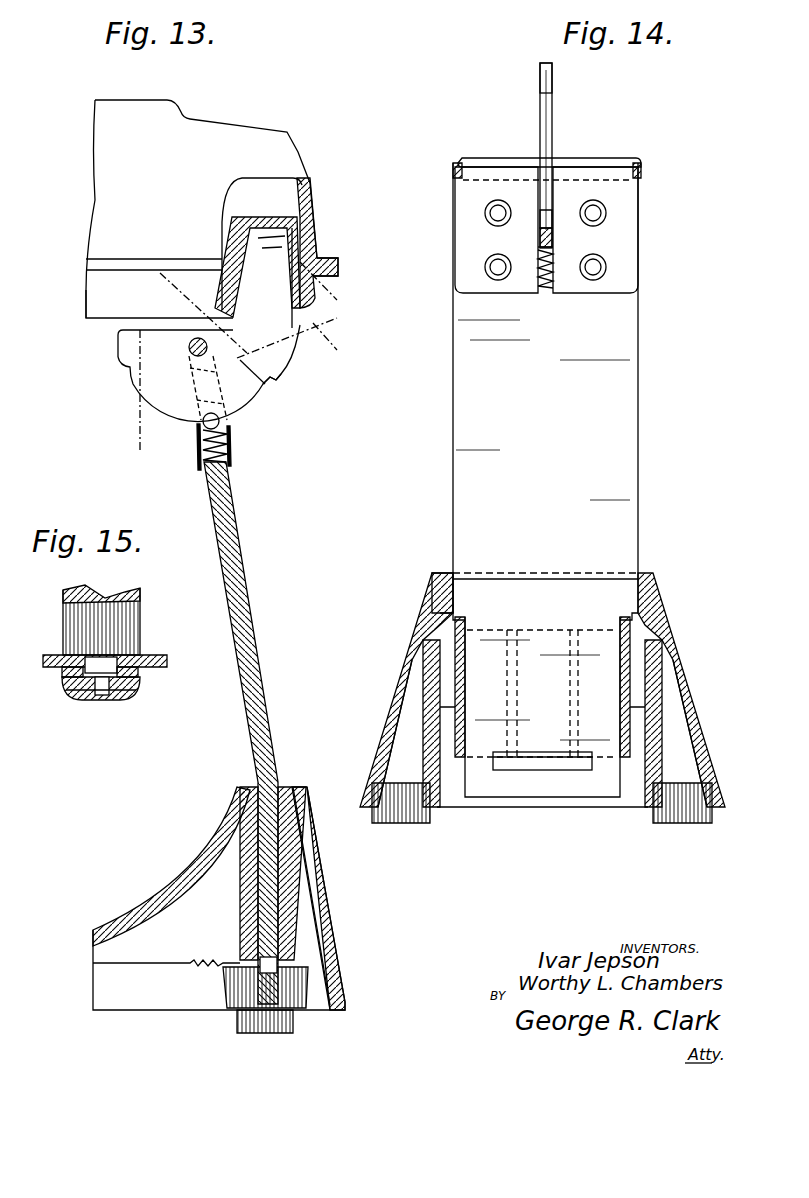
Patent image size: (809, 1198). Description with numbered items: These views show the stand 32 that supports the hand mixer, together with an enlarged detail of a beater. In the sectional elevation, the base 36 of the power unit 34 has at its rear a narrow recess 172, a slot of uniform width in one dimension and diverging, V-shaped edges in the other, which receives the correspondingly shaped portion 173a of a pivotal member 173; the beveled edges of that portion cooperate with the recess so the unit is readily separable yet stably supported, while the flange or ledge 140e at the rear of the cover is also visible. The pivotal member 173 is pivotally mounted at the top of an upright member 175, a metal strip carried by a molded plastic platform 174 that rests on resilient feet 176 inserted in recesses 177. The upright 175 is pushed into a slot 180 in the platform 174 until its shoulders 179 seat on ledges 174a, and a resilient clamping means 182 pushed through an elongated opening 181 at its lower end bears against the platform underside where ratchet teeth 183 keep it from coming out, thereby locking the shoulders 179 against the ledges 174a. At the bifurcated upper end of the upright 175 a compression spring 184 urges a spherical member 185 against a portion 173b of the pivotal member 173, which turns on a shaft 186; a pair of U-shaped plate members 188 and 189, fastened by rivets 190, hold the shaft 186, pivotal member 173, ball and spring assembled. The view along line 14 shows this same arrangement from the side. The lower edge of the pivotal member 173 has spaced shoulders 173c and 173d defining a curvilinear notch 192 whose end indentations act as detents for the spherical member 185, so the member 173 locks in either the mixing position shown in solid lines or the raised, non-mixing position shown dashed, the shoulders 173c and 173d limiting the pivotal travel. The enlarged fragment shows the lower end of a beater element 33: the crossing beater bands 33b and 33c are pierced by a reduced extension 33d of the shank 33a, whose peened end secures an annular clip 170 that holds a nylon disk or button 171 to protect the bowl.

In FIG. 13, the section line 14 is at (290, 100).
In FIG. 13, the stand 32 is at (270, 640).
In FIG. 14, the stand 32 is at (650, 494).
In FIG. 15, the beater element 33 is at (60, 599).
In FIG. 15, the shank 33a is at (133, 609).
In FIG. 15, the beater band 33b is at (58, 655).
In FIG. 15, the beater band 33c is at (64, 675).
In FIG. 15, the extension of reduced cross section 33d is at (101, 664).
In FIG. 13, the power unit 34 is at (184, 116).
In FIG. 13, the base 36 is at (100, 300).
In FIG. 13, the flange or ledge 140e is at (338, 262).
In FIG. 15, the annular clip 170 is at (136, 680).
In FIG. 15, the nylon disk or button 171 is at (97, 699).
In FIG. 13, the recess 172 is at (263, 228).
In FIG. 13, the pivotal member 173 is at (304, 326).
In FIG. 14, the pivotal member 173 is at (549, 138).
In FIG. 13, the shaped portion 173a is at (268, 241).
In FIG. 14, the shaped portion 173a is at (540, 82).
In FIG. 13, the portion of pivotal support 173b is at (178, 377).
In FIG. 13, the shoulder 173c is at (200, 432).
In FIG. 13, the shoulder 173d is at (292, 380).
In FIG. 14, the shoulder 173d is at (551, 216).
In FIG. 13, the platform 174 is at (326, 867).
In FIG. 14, the platform 174 is at (674, 649).
In FIG. 14, the ledges 174a is at (465, 625).
In FIG. 13, the upright member 175 is at (237, 560).
In FIG. 14, the upright member 175 is at (639, 356).
In FIG. 13, the feet 176 is at (240, 1022).
In FIG. 14, the feet 176 is at (424, 815).
In FIG. 14, the recesses 177 is at (412, 757).
In FIG. 13, the shoulders 179 is at (249, 790).
In FIG. 14, the shoulders 179 is at (440, 617).
In FIG. 13, the slot 180 is at (279, 786).
In FIG. 14, the slot 180 is at (456, 600).
In FIG. 13, the elongated opening 181 is at (276, 966).
In FIG. 14, the elongated opening 181 is at (534, 753).
In FIG. 13, the resilient clamping means 182 is at (280, 967).
In FIG. 14, the resilient clamping means 182 is at (547, 771).
In FIG. 13, the ratchet teeth 183 is at (208, 963).
In FIG. 13, the compression spring 184 is at (227, 446).
In FIG. 14, the compression spring 184 is at (554, 286).
In FIG. 13, the spherical member 185 is at (219, 425).
In FIG. 14, the spherical member 185 is at (540, 252).
In FIG. 13, the shaft 186 is at (193, 339).
In FIG. 14, the shaft 186 is at (636, 166).
In FIG. 13, the U-shaped plate member 188 is at (231, 458).
In FIG. 14, the U-shaped plate member 188 is at (619, 204).
In FIG. 14, the U-shaped plate member 189 is at (471, 206).
In FIG. 13, the rivets 190 is at (240, 362).
In FIG. 14, the rivets 190 is at (488, 222).
In FIG. 13, the notch 192 is at (265, 421).
In FIG. 14, the notch 192 is at (553, 231).